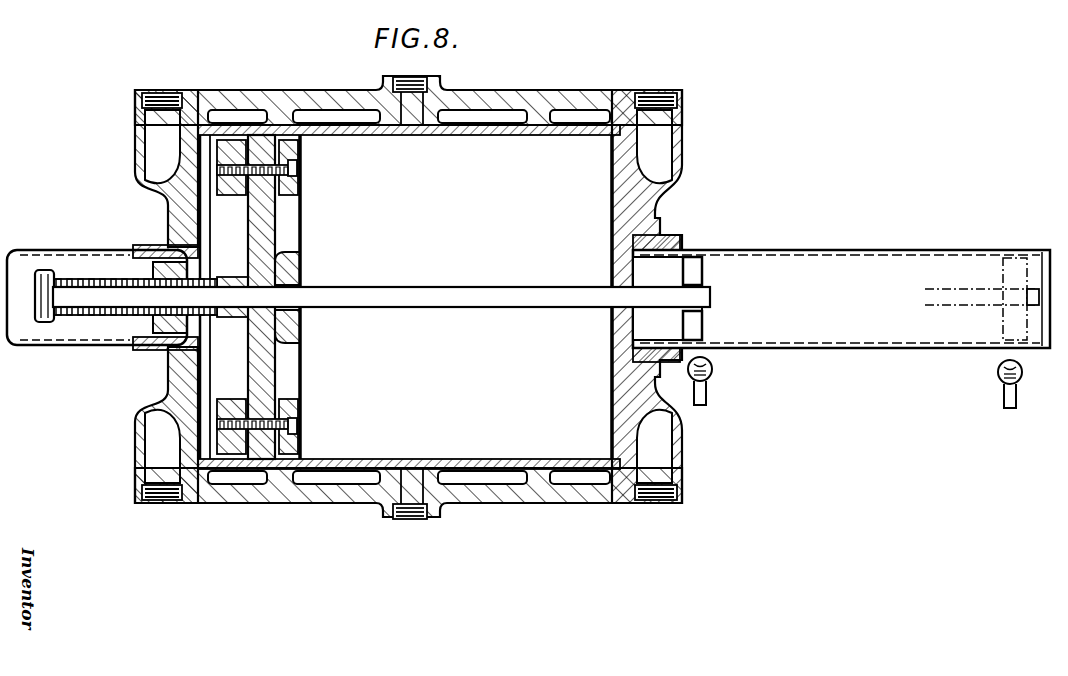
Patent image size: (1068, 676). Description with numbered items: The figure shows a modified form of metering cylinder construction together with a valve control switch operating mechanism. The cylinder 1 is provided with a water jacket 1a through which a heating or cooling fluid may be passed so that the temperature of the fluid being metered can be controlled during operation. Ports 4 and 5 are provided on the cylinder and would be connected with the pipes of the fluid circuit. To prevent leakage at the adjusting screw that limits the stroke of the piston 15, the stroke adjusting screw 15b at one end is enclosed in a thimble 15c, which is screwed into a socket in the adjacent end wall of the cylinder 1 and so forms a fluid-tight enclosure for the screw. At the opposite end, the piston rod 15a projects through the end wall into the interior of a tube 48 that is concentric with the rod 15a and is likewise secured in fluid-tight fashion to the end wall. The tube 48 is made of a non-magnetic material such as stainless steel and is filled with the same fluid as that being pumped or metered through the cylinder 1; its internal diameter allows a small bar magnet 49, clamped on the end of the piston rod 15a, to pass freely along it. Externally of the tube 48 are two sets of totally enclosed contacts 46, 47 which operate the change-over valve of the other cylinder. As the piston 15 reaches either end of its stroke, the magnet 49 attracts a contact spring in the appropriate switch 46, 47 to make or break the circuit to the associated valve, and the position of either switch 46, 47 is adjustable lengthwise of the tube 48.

The cylinder 1 is at (440, 232).
The water jacket 1a is at (471, 104).
The port 4 is at (166, 163).
The port 5 is at (648, 168).
The piston 15 is at (290, 233).
The piston rod 15a is at (482, 308).
The stroke adjusting screw 15b is at (115, 277).
The thimble 15c is at (56, 340).
The totally enclosed contacts 46 is at (712, 373).
The totally enclosed contacts 47 is at (997, 370).
The tube 48 is at (817, 253).
The bar magnet 49 is at (702, 273).